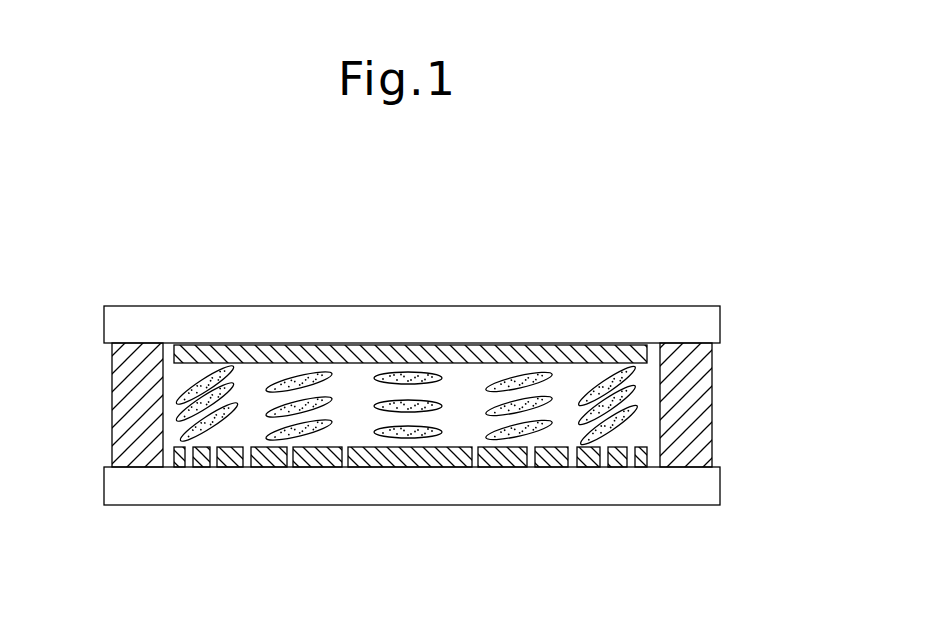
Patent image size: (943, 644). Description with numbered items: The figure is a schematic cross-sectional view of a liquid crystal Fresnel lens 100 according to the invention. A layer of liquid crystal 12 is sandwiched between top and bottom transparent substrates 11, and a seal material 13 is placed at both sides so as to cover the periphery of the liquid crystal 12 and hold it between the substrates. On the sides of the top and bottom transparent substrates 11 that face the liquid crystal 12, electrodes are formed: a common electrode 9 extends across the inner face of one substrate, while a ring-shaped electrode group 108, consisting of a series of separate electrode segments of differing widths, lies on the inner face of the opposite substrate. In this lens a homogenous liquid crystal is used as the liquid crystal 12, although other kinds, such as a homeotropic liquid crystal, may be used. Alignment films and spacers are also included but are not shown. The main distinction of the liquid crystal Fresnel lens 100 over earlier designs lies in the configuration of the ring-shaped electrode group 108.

The liquid crystal Fresnel lens 100 is at (524, 220).
The transparent substrate 11 is at (707, 318).
The seal material 13 is at (120, 407).
The common electrode 9 is at (492, 351).
The ring-shaped electrode group 108 is at (397, 463).
The liquid crystal 12 is at (208, 372).